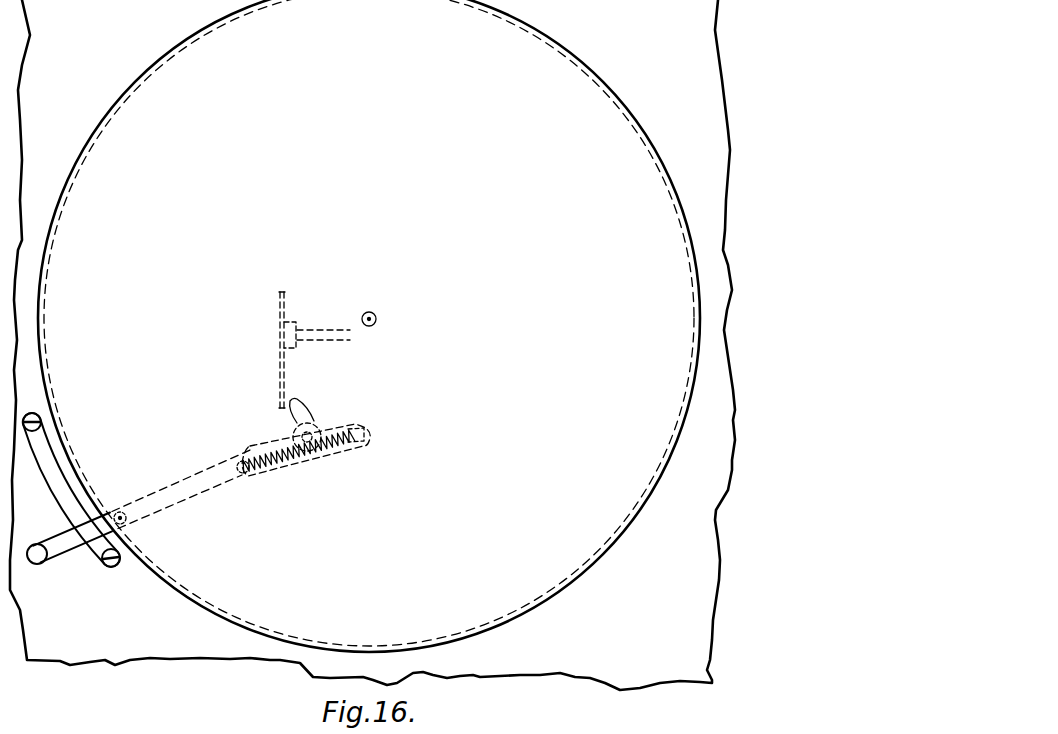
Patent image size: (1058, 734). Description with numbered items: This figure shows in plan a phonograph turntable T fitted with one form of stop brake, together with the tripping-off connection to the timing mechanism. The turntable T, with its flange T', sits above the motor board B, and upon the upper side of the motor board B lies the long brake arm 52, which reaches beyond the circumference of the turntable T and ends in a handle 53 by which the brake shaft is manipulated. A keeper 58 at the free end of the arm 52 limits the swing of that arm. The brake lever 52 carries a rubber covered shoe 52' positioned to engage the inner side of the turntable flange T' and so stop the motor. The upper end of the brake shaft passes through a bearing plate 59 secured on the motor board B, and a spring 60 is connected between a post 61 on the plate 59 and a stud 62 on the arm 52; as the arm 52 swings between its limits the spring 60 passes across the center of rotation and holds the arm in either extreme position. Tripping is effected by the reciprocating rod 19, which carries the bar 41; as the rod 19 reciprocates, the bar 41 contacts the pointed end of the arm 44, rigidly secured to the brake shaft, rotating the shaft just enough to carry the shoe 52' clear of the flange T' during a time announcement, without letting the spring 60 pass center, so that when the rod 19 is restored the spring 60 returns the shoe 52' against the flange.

The reciprocating rod 19 is at (323, 341).
The bar 41 is at (284, 381).
The arm 44 is at (300, 409).
The brake arm 52 is at (181, 491).
The rubber covered shoe 52' is at (140, 528).
The handle 53 is at (37, 565).
The keeper 58 is at (54, 497).
The bearing plate 59 is at (323, 423).
The spring 60 is at (285, 463).
The post 61 is at (366, 433).
The stud 62 is at (243, 475).
The turntable T is at (369, 326).
The turntable flange T' is at (160, 570).
The motor board B is at (372, 345).